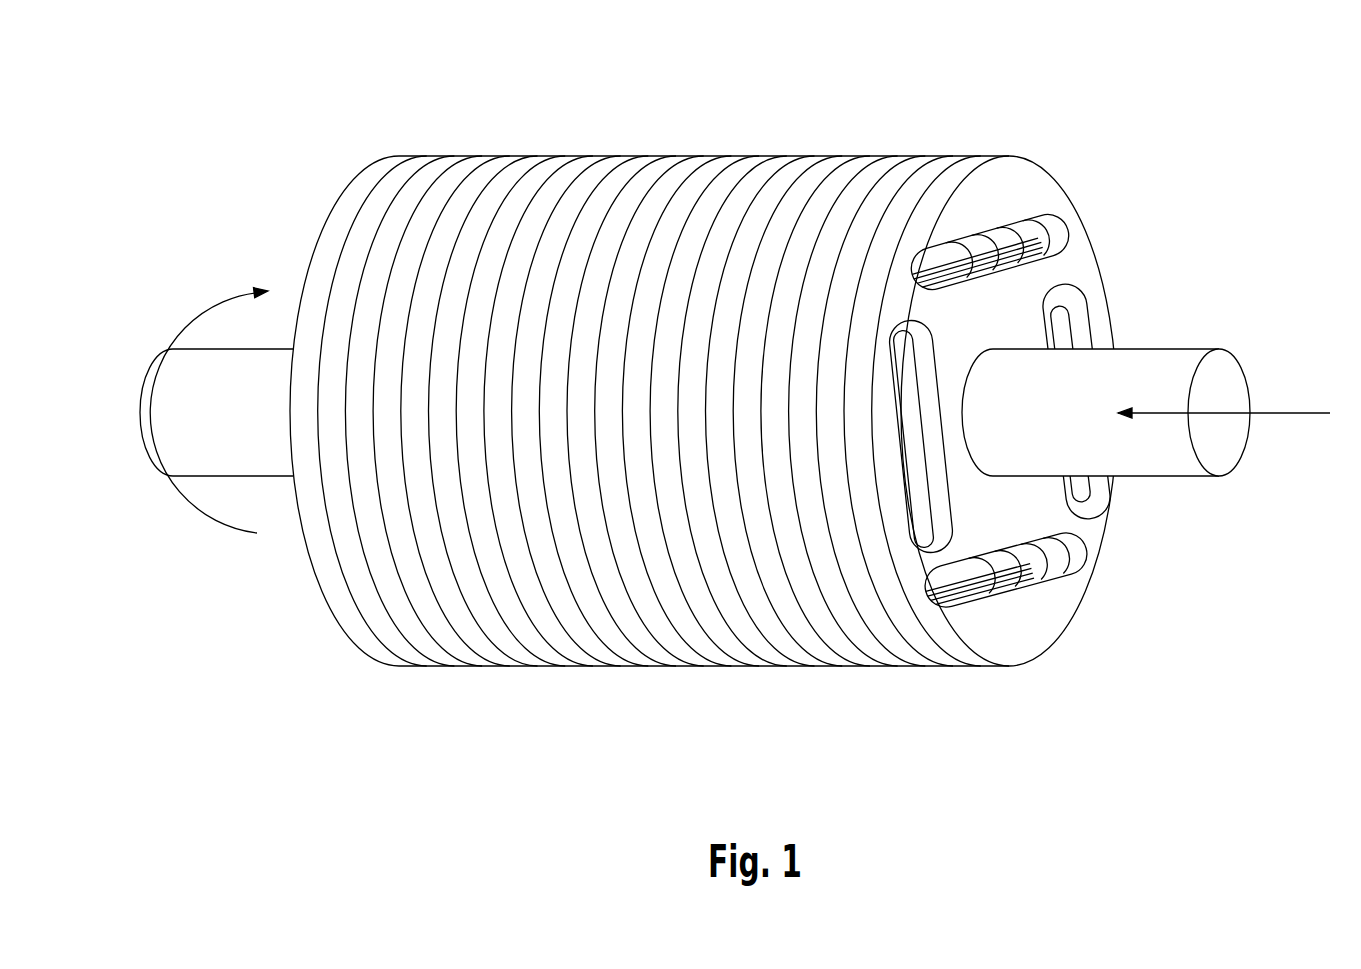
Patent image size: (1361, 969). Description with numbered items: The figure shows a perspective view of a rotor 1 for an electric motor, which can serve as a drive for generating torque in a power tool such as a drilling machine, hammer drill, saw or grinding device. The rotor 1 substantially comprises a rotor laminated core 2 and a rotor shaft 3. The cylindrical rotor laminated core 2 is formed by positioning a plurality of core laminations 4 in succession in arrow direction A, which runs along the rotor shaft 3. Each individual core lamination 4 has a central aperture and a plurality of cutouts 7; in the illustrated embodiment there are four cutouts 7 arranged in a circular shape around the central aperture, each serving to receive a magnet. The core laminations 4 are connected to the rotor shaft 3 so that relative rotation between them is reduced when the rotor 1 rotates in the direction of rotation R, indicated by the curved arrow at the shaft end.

The rotor 1 is at (735, 415).
The rotor laminated core 2 is at (255, 664).
The rotor shaft 3 is at (1147, 460).
The core lamination 4 is at (1034, 447).
The cutouts 7 is at (1068, 326).
The arrow direction A is at (1288, 413).
The direction of rotation R is at (205, 316).